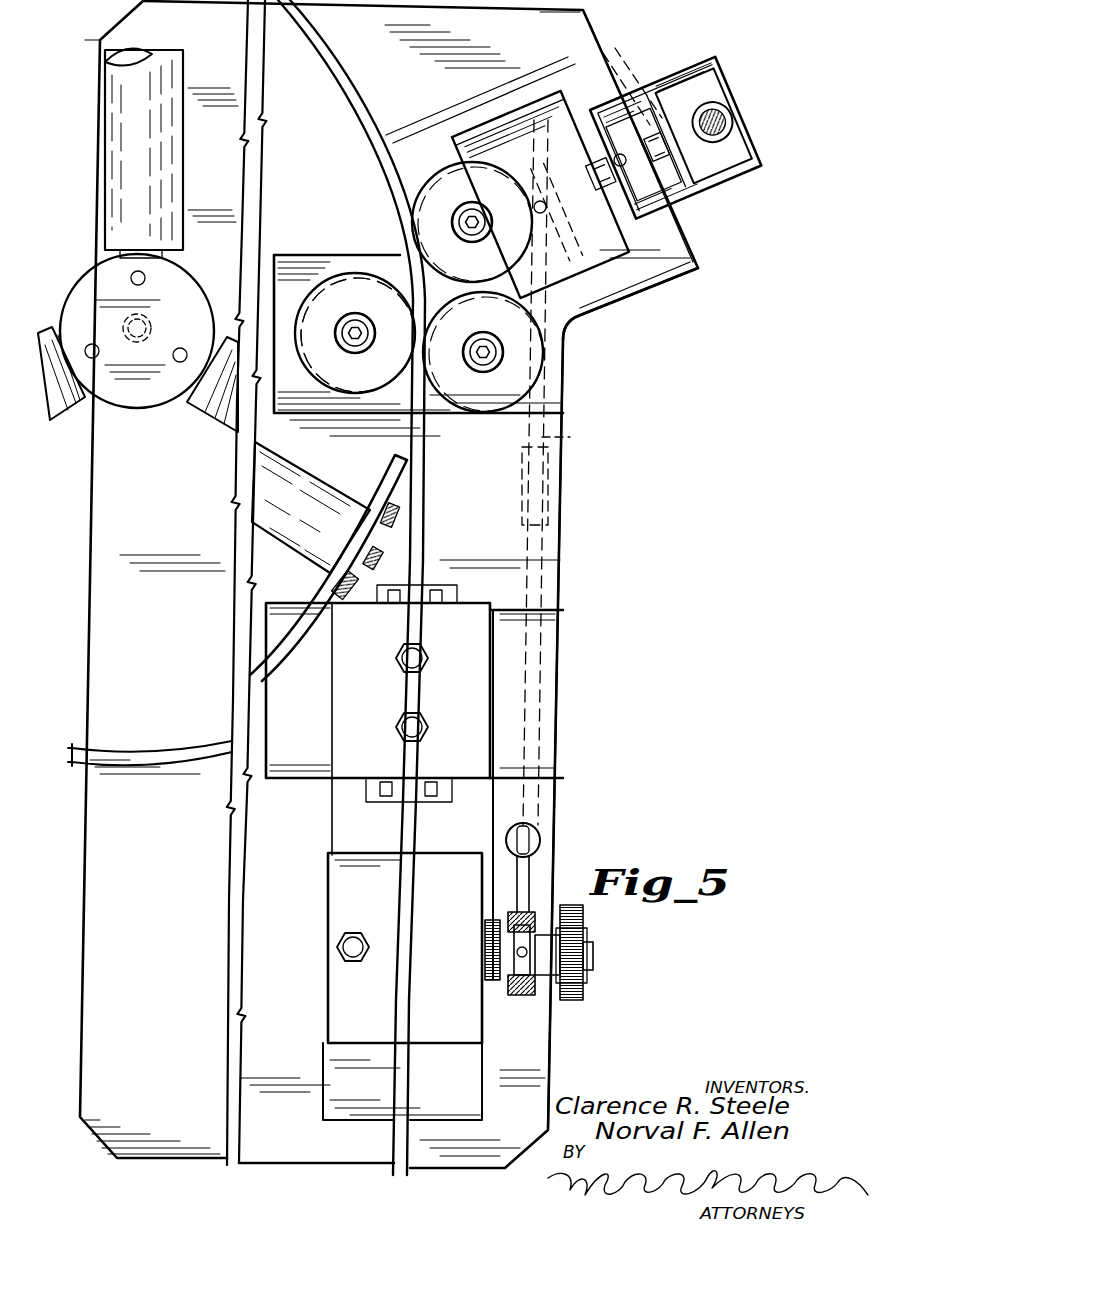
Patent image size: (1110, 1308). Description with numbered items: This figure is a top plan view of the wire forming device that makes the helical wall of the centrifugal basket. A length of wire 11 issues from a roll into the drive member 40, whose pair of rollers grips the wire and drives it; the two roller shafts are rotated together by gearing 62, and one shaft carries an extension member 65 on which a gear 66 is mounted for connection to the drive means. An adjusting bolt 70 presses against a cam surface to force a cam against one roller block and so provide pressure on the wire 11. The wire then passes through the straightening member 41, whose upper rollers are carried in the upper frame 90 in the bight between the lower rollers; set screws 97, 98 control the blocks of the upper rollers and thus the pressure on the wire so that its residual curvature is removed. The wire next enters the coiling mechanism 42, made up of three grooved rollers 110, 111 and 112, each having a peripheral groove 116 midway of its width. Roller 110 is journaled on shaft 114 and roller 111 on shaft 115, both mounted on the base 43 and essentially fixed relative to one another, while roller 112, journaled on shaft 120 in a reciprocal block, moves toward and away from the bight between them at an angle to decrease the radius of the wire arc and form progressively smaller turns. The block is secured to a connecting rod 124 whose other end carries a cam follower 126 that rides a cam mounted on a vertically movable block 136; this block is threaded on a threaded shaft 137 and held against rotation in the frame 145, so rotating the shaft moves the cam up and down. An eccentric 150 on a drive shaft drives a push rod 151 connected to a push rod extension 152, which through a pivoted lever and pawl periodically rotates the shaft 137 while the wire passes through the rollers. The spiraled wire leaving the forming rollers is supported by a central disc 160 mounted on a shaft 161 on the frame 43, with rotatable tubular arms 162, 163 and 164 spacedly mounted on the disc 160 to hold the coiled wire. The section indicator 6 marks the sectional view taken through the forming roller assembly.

The section plate 6 is at (285, 282).
The wire 11 is at (345, 82).
The drive member 40 is at (350, 1024).
The straightening member 41 is at (478, 695).
The coiling mechanism 42 is at (578, 337).
The base 43 is at (555, 582).
The gearing 62 is at (487, 938).
The extension member 65 is at (594, 952).
The gear 66 is at (590, 998).
The adjusting bolt 70 is at (337, 950).
The upper frame 90 is at (303, 786).
The set screw 97 is at (428, 738).
The set screw 98 is at (396, 659).
The roller 110 is at (338, 388).
The roller 111 is at (468, 405).
The roller 112 is at (484, 209).
The shaft 114 is at (354, 330).
The shaft 115 is at (486, 348).
The groove 116 is at (350, 272).
The shaft 120 is at (470, 215).
The connecting rod 124 is at (603, 190).
The cam follower 126 is at (672, 165).
The vertically movable block 136 is at (720, 152).
The threaded shaft 137 is at (735, 122).
The frame 145 is at (722, 182).
The eccentric 150 is at (520, 996).
The push rod 151 is at (527, 872).
The push rod extension 152 is at (548, 437).
The central disc 160 is at (143, 397).
The shaft 161 is at (130, 314).
The tubular arm 162 is at (113, 138).
The tubular arm 163 is at (72, 412).
The tubular arm 164 is at (210, 410).